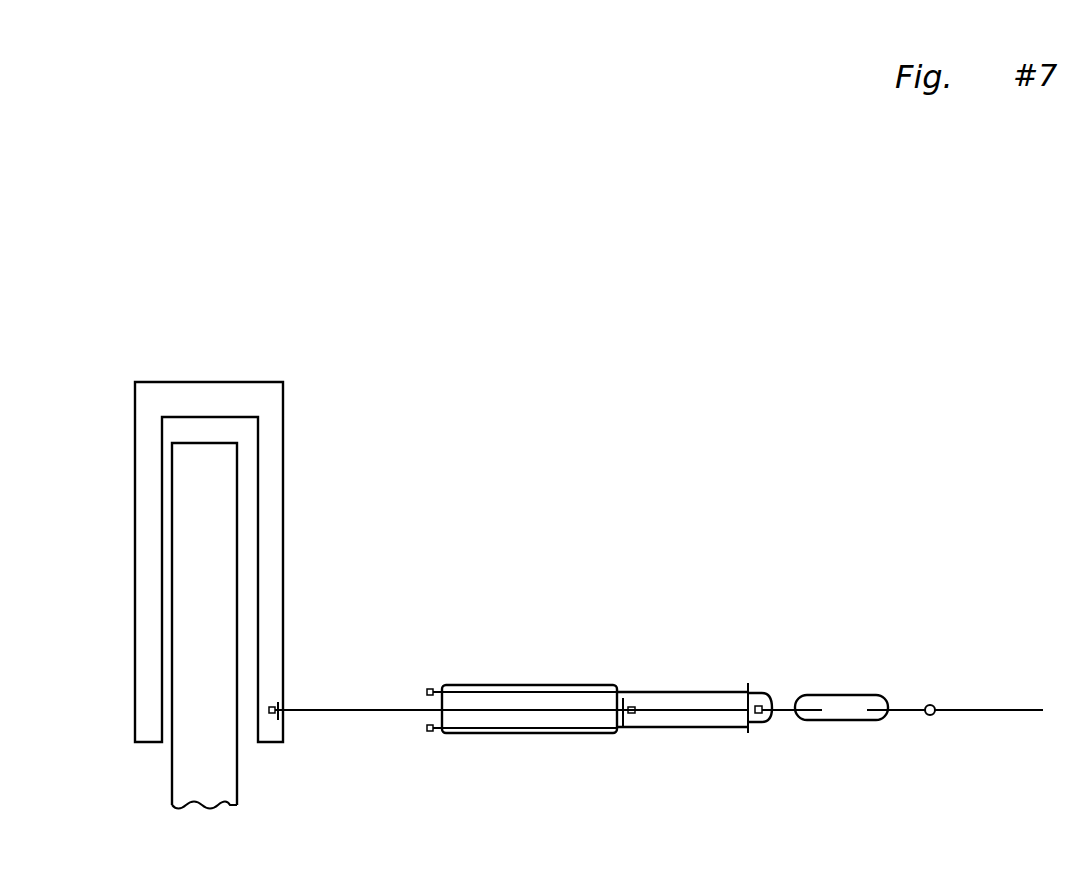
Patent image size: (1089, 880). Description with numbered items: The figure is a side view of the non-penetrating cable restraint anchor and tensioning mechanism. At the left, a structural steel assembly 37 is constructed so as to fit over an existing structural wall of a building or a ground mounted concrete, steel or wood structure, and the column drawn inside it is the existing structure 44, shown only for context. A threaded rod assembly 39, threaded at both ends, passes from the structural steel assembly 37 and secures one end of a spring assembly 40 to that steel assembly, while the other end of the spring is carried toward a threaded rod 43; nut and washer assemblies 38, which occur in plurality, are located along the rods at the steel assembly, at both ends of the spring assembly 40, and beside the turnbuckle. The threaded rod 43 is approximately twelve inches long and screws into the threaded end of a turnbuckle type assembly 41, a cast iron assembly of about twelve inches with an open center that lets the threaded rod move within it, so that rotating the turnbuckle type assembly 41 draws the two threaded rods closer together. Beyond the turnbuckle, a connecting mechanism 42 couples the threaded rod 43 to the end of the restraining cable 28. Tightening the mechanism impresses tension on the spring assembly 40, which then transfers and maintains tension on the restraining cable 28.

The restraining cable 28 is at (1007, 708).
The structural steel assembly 37 is at (152, 407).
The nut and washer assembly 38 is at (278, 703).
The threaded rod assembly 39 is at (372, 712).
The spring assembly 40 is at (590, 733).
The turnbuckle type assembly 41 is at (860, 695).
The connecting mechanism 42 is at (932, 716).
The threaded rod 43 is at (793, 700).
The existing structure 44 is at (204, 626).